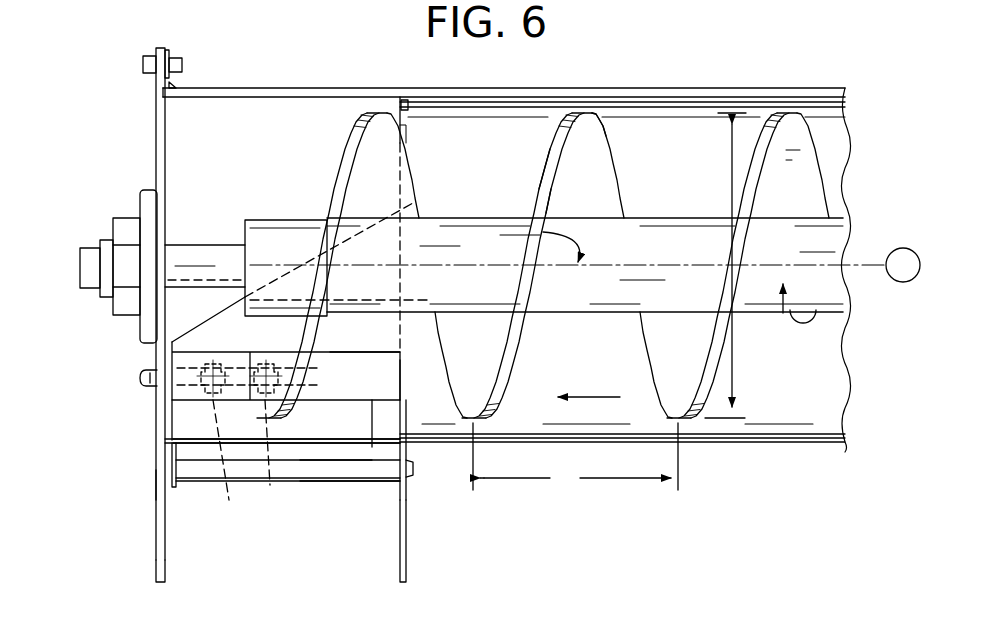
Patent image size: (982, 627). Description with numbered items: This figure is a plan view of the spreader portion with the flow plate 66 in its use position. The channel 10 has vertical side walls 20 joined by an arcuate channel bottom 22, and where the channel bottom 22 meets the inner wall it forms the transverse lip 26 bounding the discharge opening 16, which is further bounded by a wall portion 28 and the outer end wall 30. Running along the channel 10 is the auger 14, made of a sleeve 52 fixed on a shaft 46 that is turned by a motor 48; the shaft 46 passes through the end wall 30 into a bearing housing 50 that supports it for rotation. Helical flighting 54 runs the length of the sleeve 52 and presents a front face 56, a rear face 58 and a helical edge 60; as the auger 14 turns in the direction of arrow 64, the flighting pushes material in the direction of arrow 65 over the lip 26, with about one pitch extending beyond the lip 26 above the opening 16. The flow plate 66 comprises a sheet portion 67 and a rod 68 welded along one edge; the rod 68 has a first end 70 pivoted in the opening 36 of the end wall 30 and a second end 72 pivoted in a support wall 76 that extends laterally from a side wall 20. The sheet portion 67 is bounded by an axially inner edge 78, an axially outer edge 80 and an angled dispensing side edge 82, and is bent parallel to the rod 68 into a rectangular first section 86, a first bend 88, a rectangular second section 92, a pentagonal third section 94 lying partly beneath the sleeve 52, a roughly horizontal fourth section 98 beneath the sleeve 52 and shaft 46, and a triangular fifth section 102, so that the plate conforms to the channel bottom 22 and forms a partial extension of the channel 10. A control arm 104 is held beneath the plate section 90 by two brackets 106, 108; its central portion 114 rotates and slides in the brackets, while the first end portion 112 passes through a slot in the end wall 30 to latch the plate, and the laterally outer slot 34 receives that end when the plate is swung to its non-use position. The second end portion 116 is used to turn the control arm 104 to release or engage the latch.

The channel 10 is at (814, 448).
The auger 14 is at (818, 181).
The opening 16 is at (290, 115).
The side walls 20 is at (680, 90).
The channel bottom 22 is at (682, 172).
The lip 26 is at (400, 125).
The wall portion 28 is at (230, 90).
The end wall 30 is at (152, 145).
The laterally outer slot 34 is at (157, 563).
The opening 36 is at (157, 485).
The shaft 46 is at (199, 250).
The motor 48 is at (906, 283).
The bearing housing 50 is at (120, 217).
The sleeve 52 is at (625, 299).
The helical flighting 54 is at (548, 145).
The front face 56 is at (490, 352).
The rear face 58 is at (588, 145).
The helical edge 60 is at (548, 176).
The arrow 64 is at (799, 323).
The arrow 65 is at (582, 398).
The flow plate 66 is at (172, 427).
The sheet portion 67 is at (402, 380).
The rod 68 is at (310, 484).
The first end 70 is at (177, 473).
The second end 72 is at (413, 469).
The support wall 76 is at (408, 548).
The axially inner edge 78 is at (421, 320).
The axially outer edge 80 is at (171, 422).
The laterally inner angled side edge 82 is at (150, 322).
The first section 86 is at (350, 423).
The first bend 88 is at (374, 481).
The plate section 90 is at (392, 362).
The second section 92 is at (368, 330).
The third section 94 is at (137, 288).
The fourth section 98 is at (307, 256).
The fifth section 102 is at (413, 203).
The control arm 104 is at (134, 371).
The bracket 106 is at (229, 500).
The bracket 108 is at (270, 485).
The first end portion 112 is at (137, 378).
The central portion 114 is at (240, 352).
The second end portion 116 is at (304, 373).